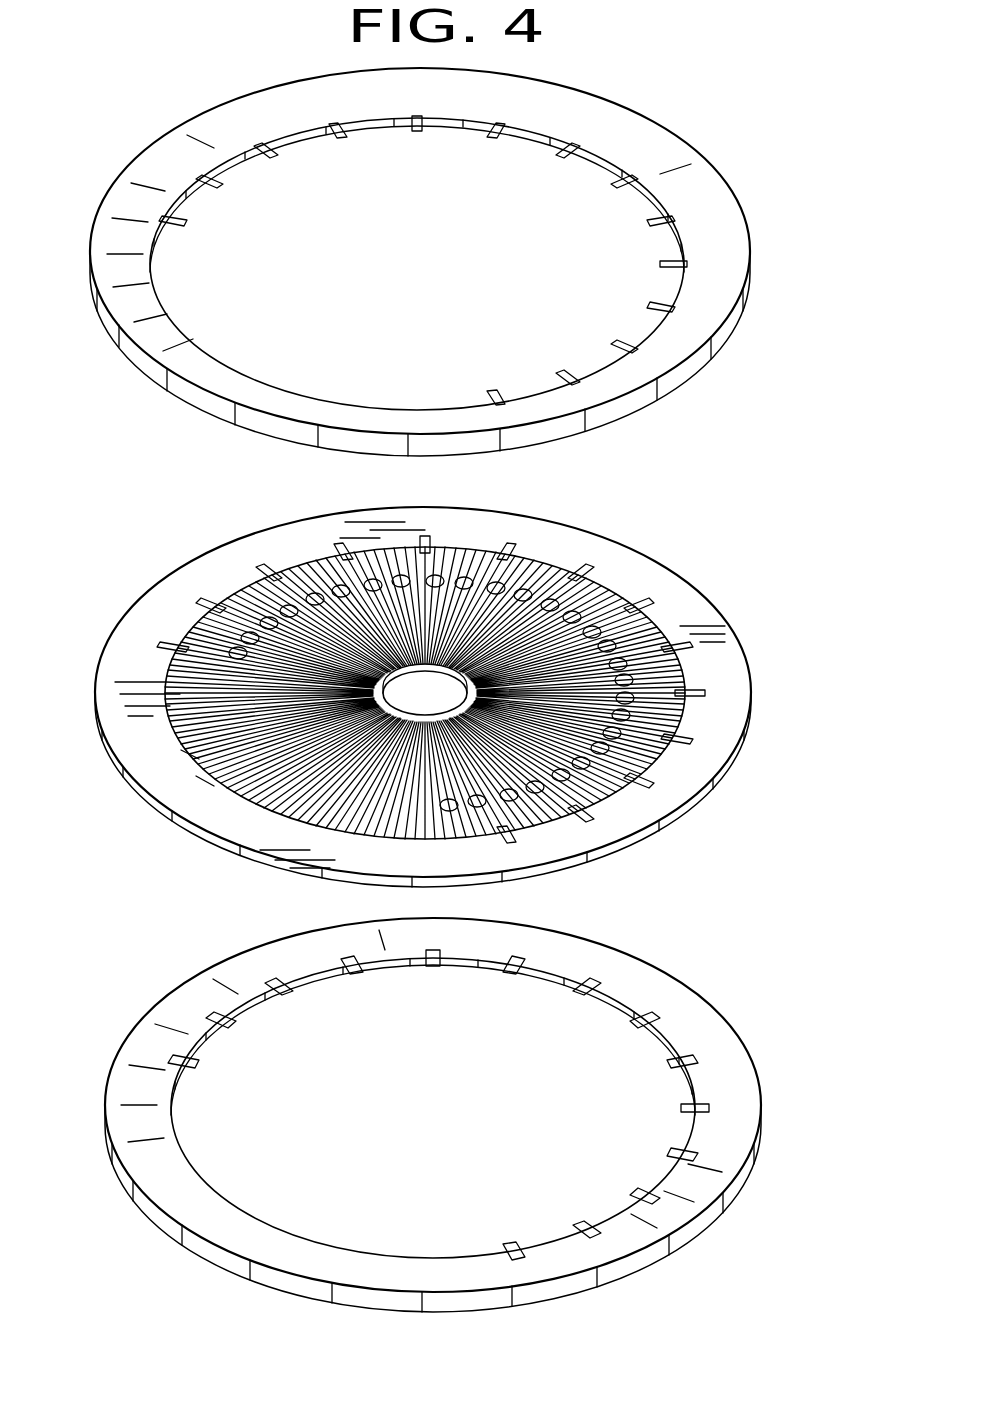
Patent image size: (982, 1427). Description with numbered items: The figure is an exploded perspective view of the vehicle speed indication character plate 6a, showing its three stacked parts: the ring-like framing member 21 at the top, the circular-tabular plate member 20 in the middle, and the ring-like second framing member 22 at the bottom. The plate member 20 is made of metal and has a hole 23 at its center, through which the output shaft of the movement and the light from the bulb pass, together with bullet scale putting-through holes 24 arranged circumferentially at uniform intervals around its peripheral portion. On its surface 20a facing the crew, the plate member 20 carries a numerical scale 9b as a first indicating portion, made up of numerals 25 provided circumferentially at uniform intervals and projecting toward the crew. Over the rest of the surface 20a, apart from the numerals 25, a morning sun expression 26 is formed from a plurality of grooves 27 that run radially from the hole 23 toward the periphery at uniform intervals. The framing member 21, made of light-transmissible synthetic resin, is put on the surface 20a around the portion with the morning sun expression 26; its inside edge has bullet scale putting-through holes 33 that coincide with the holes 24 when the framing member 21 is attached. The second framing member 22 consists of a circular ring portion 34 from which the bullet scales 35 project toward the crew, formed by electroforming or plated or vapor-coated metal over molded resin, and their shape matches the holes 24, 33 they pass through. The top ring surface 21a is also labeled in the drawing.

The vehicle speed indication character plate 6a is at (836, 1085).
The framing member 21 is at (730, 351).
The upper ring top surface 21a is at (712, 229).
The bullet scale putting-through holes 33 is at (212, 188).
The plate member 20 is at (744, 757).
The surface 20a is at (602, 585).
The hole 23 is at (440, 676).
The bullet scale putting-through holes 24 is at (266, 574).
The numerals 25 is at (645, 650).
The numerical scale 9b is at (796, 576).
The grooves 27 is at (208, 770).
The morning sun expression 26 is at (75, 755).
The second framing member 22 is at (750, 1040).
The circular ring portion 34 is at (718, 1138).
The bullet scales 35 is at (424, 965).